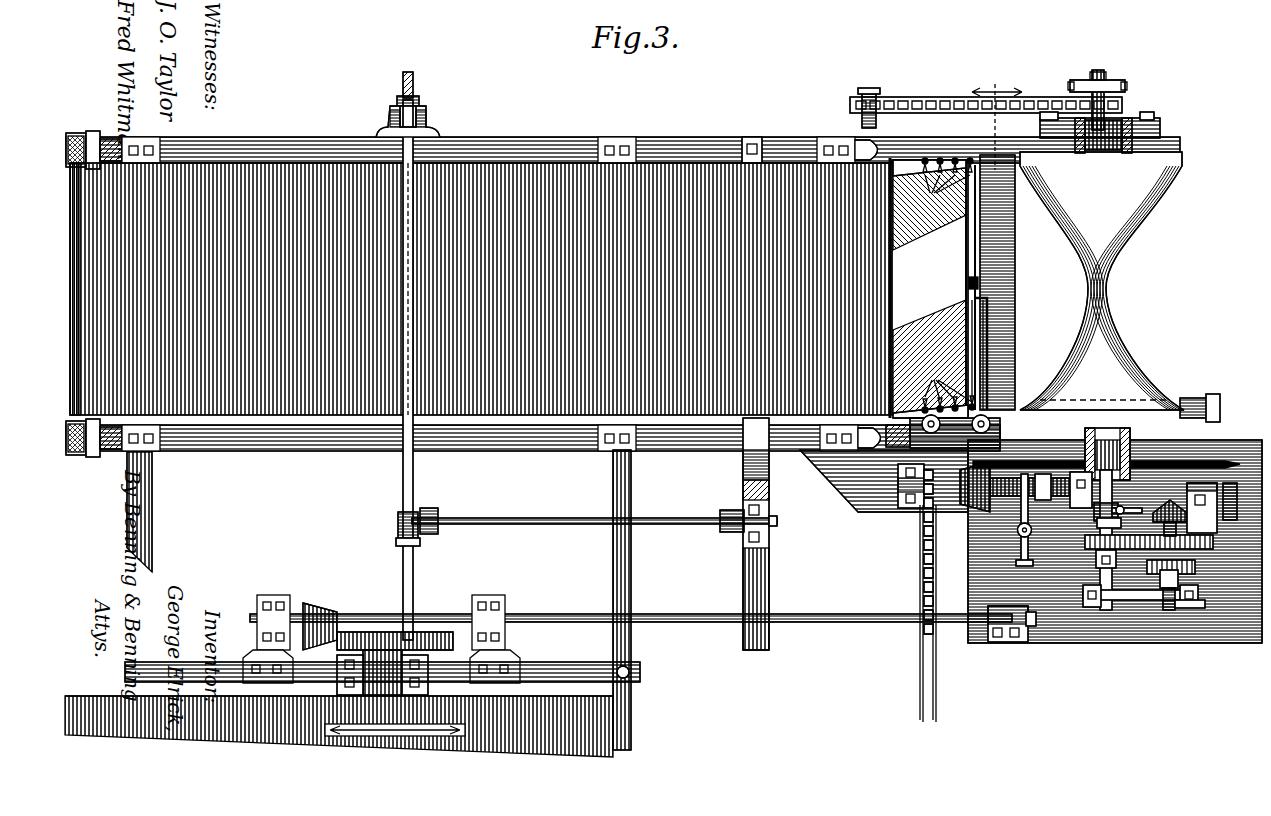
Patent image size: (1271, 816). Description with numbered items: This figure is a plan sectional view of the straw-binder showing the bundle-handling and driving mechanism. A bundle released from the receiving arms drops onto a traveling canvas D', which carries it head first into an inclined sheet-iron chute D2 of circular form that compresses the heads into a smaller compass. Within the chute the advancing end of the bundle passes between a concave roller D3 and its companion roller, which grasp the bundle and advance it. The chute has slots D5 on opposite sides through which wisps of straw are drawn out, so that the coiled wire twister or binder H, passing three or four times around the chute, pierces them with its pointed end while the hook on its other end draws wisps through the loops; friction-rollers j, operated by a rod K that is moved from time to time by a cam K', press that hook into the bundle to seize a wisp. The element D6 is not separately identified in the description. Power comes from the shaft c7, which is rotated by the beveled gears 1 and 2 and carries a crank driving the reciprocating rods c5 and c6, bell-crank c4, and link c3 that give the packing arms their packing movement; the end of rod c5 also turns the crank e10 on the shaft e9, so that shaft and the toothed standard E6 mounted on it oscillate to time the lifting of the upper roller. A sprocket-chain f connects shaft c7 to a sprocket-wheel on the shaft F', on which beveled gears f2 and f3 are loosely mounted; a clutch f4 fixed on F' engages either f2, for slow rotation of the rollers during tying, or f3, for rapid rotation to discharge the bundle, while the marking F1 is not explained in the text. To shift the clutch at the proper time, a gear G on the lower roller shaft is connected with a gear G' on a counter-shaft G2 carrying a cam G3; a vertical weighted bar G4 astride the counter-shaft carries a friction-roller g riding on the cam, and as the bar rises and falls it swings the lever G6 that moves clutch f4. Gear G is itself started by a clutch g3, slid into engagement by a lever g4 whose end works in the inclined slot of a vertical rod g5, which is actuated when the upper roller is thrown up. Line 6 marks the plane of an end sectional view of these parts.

The traveling canvas D' is at (480, 288).
The chute D2 is at (930, 287).
The roller D3 is at (1110, 284).
The slots D5 is at (922, 157).
The lower brush D6 is at (915, 395).
The twister or binder H is at (948, 288).
The friction-rollers j is at (982, 292).
The section line 6 is at (986, 118).
The rod K is at (1049, 413).
The cam K' is at (1219, 513).
The shaft F' is at (1106, 449).
The bearing block F1 is at (898, 490).
The sprocket-chain f is at (936, 596).
The beveled gear f2 is at (988, 508).
The beveled gear f3 is at (1080, 508).
The clutch f4 is at (1043, 498).
The gear G is at (1132, 555).
The gear G' is at (1165, 540).
The counter-shaft G2 is at (1185, 608).
The cam G3 is at (1198, 585).
The vertical weighted bar G4 is at (1145, 568).
The lever G6 is at (1021, 566).
The friction-roller g is at (1165, 588).
The clutch g3 is at (1119, 524).
The lever g4 is at (1128, 506).
The vertical rod g5 is at (1166, 504).
The link c3 is at (413, 78).
The bell-crank c4 is at (419, 99).
The reciprocating rod c5 is at (386, 131).
The reciprocating rod c6 is at (403, 463).
The shaft c7 is at (418, 630).
The shaft e9 is at (548, 525).
The crank e10 is at (426, 508).
The standard E6 is at (728, 532).
The beveled gear 1 is at (425, 632).
The beveled gear 2 is at (316, 604).